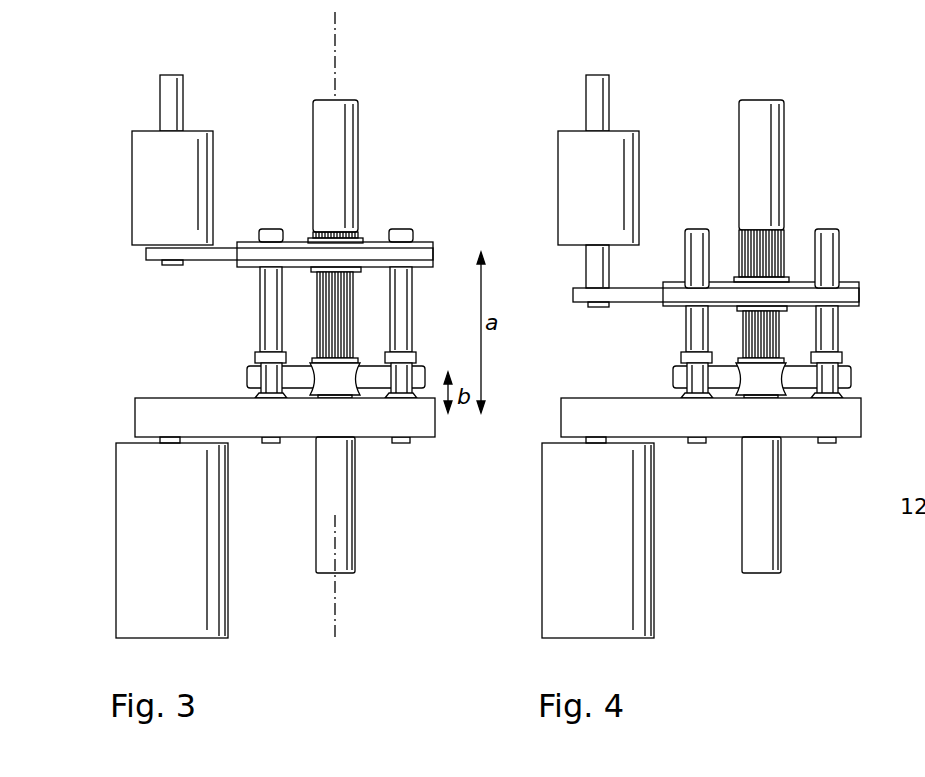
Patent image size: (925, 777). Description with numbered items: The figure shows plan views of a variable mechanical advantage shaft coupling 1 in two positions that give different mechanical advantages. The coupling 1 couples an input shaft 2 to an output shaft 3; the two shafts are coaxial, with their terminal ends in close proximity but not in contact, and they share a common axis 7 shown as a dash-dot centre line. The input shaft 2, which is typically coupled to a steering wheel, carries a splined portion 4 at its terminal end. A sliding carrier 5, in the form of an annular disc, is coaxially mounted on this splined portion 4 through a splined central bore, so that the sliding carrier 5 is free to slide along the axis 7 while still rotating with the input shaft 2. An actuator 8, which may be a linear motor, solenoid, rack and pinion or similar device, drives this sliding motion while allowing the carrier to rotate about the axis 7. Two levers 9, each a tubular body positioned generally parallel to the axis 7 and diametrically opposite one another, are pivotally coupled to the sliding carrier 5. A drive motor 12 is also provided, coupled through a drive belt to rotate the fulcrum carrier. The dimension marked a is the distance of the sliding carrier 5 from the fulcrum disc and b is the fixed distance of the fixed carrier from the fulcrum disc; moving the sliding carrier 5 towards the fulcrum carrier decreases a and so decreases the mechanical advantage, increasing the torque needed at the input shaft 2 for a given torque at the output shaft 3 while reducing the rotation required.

In FIG. 3, the variable mechanical advantage shaft coupling 1 is at (356, 620).
In FIG. 4, the variable mechanical advantage shaft coupling 1 is at (811, 659).
In FIG. 3, the input shaft 2 is at (349, 133).
In FIG. 4, the input shaft 2 is at (797, 163).
In FIG. 3, the output shaft 3 is at (348, 497).
In FIG. 4, the output shaft 3 is at (790, 505).
In FIG. 3, the splined portion 4 is at (316, 310).
In FIG. 4, the splined portion 4 is at (761, 314).
In FIG. 3, the sliding carrier 5 is at (430, 245).
In FIG. 4, the sliding carrier 5 is at (749, 304).
In FIG. 3, the common axis 7 is at (337, 44).
In FIG. 3, the actuator 8 is at (137, 178).
In FIG. 4, the actuator 8 is at (567, 191).
In FIG. 3, the levers 9 is at (258, 338).
In FIG. 4, the levers 9 is at (742, 336).
In FIG. 3, the drive motor 12 is at (118, 525).
In FIG. 4, the drive motor 12 is at (557, 537).